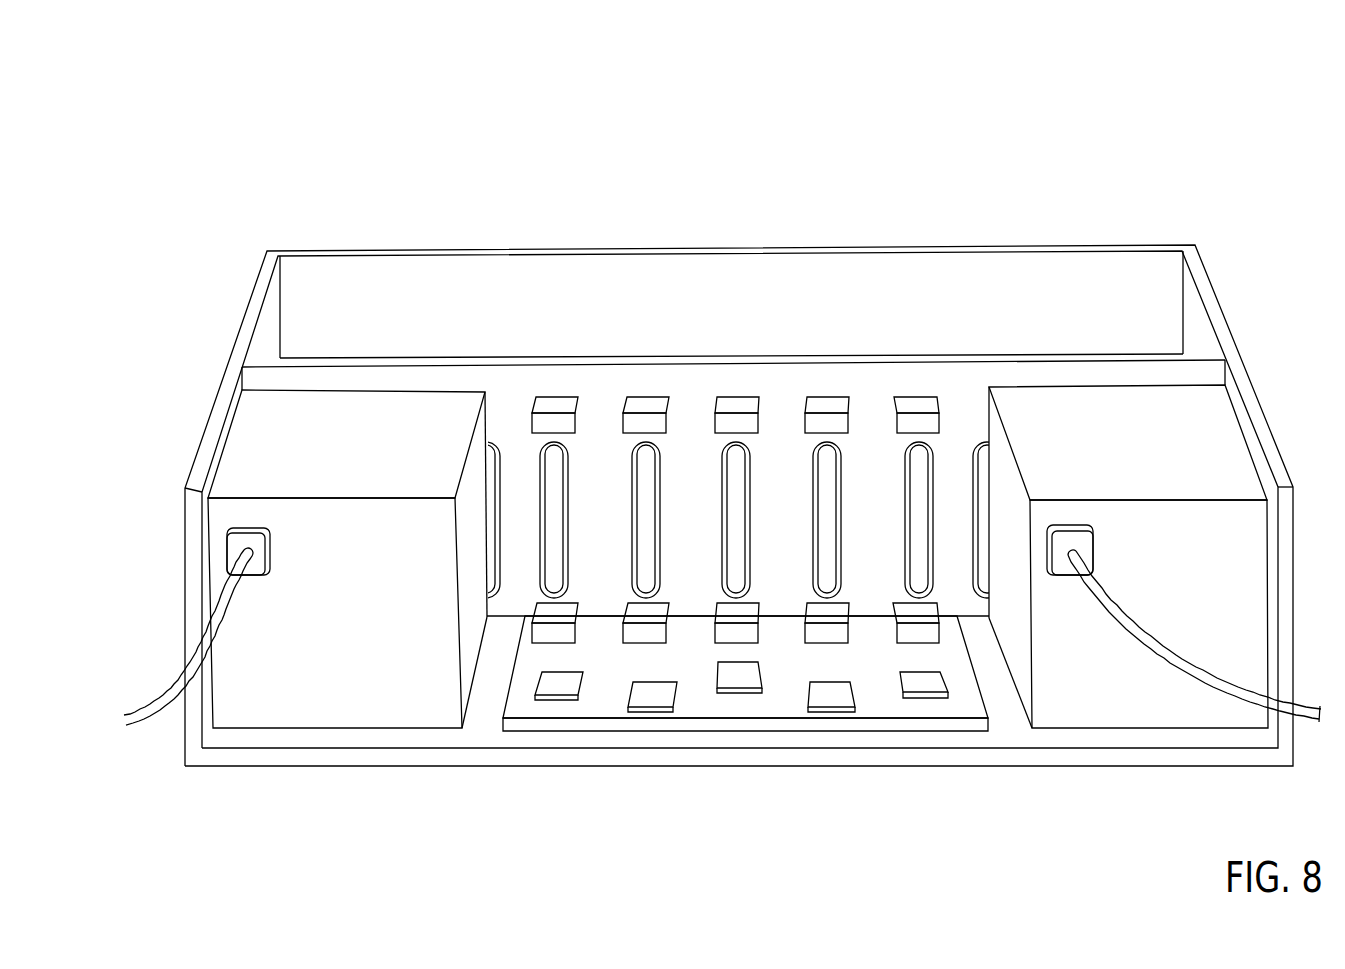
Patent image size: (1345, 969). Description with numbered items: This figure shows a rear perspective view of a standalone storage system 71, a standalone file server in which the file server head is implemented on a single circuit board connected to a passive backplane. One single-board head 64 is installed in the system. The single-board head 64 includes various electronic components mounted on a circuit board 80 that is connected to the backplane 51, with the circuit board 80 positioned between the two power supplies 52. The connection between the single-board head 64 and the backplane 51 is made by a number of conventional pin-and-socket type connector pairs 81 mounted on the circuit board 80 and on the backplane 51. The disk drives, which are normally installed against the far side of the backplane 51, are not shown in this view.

The standalone storage system 71 is at (1074, 143).
The backplane 51 is at (978, 355).
The power supplies 52 is at (313, 724).
The circuit board 80 is at (755, 724).
The single-board head 64 is at (915, 745).
The connector pairs 81 is at (650, 398).